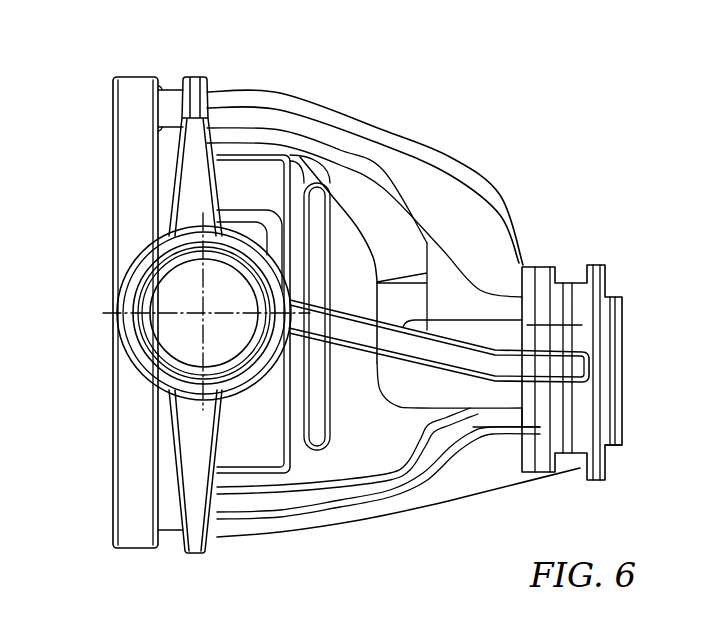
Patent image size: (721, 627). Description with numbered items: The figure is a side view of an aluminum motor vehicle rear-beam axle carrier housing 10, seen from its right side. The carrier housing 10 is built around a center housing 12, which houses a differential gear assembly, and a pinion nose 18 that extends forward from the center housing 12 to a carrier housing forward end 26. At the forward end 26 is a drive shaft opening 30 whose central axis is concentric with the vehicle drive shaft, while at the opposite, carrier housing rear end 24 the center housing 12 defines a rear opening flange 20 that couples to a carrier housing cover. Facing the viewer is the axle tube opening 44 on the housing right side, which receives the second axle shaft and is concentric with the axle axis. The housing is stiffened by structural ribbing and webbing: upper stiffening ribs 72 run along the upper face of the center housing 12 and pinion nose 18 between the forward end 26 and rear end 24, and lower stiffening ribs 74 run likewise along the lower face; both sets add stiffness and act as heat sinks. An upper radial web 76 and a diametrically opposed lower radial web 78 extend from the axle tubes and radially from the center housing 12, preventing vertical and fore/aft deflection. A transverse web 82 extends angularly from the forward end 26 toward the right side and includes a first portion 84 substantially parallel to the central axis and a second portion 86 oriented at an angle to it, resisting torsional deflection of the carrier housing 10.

The axle carrier housing 10 is at (588, 74).
The center housing 12 is at (348, 464).
The pinion nose 18 is at (502, 432).
The rear opening flange 20 is at (130, 76).
The carrier housing rear end 24 is at (104, 253).
The carrier housing forward end 26 is at (626, 310).
The drive shaft opening 30 is at (623, 452).
The axle tube opening 44 is at (157, 370).
The upper stiffening ribs 72 is at (437, 152).
The lower stiffening ribs 74 is at (318, 537).
The upper radial web 76 is at (195, 69).
The lower radial web 78 is at (195, 559).
The transverse web 82 is at (481, 383).
The first portion 84 is at (531, 263).
The second portion 86 is at (411, 452).